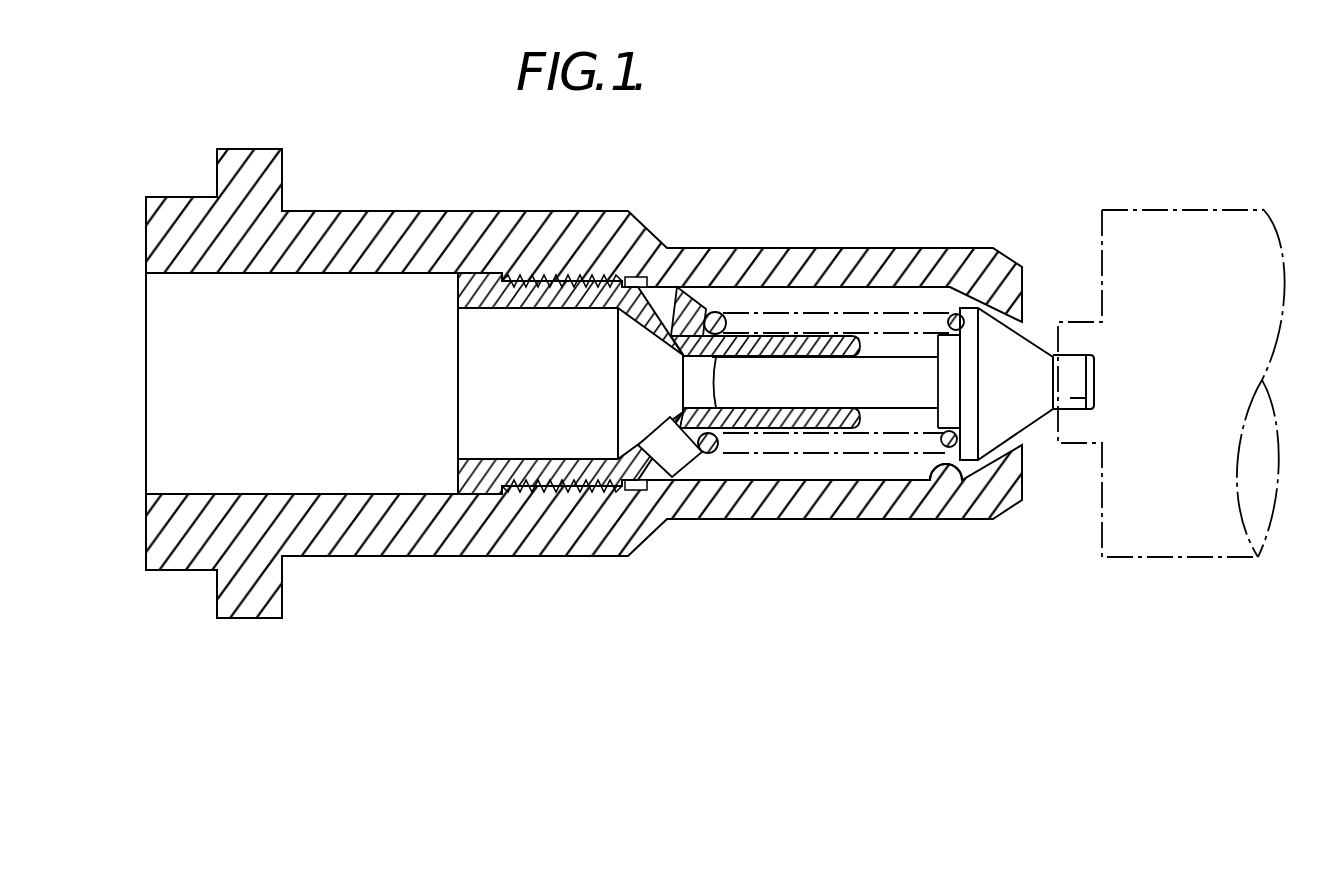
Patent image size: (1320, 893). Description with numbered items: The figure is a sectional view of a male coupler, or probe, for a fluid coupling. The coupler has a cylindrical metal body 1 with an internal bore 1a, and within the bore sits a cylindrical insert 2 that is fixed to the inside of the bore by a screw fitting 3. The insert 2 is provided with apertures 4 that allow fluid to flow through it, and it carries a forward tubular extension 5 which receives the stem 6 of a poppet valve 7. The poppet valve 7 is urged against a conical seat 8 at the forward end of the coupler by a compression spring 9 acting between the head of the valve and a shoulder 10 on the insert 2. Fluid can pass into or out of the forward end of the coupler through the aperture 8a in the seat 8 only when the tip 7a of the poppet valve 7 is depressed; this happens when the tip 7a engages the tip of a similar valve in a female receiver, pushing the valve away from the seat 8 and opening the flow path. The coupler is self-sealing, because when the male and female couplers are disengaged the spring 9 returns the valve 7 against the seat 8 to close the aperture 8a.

The cylindrical metal body 1 is at (203, 207).
The internal bore 1a is at (385, 458).
The cylindrical insert 2 is at (477, 272).
The screw fitting 3 is at (565, 487).
The apertures 4 is at (681, 468).
The forward tubular extension 5 is at (790, 431).
The stem 6 is at (878, 390).
The poppet valve 7 is at (1005, 350).
The tip 7a is at (1072, 409).
The conical seat 8 is at (945, 486).
The aperture 8a is at (1037, 320).
The compression spring 9 is at (735, 319).
The shoulder 10 is at (712, 313).